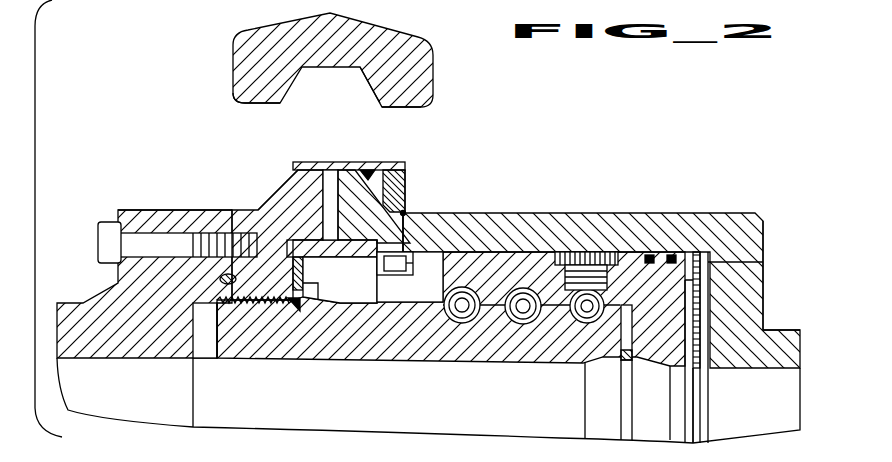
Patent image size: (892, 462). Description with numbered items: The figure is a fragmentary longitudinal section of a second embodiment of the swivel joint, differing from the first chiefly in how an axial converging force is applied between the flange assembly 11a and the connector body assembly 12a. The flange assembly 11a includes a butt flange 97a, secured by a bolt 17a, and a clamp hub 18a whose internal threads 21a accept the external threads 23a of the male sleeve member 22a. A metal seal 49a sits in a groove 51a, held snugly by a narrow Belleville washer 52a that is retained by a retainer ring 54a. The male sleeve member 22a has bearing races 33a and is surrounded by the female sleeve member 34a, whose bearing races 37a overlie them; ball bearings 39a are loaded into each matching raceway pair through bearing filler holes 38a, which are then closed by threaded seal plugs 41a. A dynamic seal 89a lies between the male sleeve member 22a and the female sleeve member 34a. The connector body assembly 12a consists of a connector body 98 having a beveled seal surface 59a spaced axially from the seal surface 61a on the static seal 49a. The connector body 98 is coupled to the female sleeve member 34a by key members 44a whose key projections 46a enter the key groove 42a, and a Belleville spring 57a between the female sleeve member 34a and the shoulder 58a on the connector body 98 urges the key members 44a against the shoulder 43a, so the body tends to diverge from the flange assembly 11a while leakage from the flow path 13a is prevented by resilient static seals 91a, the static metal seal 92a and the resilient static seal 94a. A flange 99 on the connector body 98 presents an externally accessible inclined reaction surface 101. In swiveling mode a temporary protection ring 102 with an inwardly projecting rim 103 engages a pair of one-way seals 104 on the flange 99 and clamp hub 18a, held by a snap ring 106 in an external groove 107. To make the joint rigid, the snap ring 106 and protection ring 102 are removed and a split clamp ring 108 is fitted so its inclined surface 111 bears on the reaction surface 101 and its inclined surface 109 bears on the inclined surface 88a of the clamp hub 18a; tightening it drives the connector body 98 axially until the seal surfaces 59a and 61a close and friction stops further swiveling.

The flange assembly 11a is at (114, 210).
The connector body assembly 12a is at (766, 232).
The flow path 13a is at (137, 400).
The bolt 17a is at (100, 243).
The clamp hub 18a is at (287, 203).
The internal threads 21a is at (253, 305).
The male sleeve member 22a is at (402, 350).
The external threads 23a is at (249, 330).
The bearing races 33a is at (453, 321).
The female sleeve member 34a is at (710, 262).
The bearing races 37a is at (571, 298).
The bearing filler holes 38a is at (659, 321).
The ball bearings 39a is at (530, 324).
The threaded seal plugs 41a is at (590, 252).
The key groove 42a is at (433, 240).
The shoulder 43a is at (413, 266).
The key members 44a is at (410, 277).
The key projections 46a is at (404, 228).
The metal seal 49a is at (374, 206).
The groove 51a is at (320, 234).
The narrow Belleville washer 52a is at (296, 267).
The retainer ring 54a is at (334, 287).
The Belleville spring 57a is at (702, 343).
The shoulder 58a is at (698, 380).
The beveled seal surface 59a is at (340, 279).
The seal surface 61a is at (340, 243).
The inclined surface 88a is at (296, 186).
The dynamic seal 89a is at (632, 338).
The resilient static seals 91a is at (655, 256).
The static metal seal 92a is at (221, 278).
The resilient static seal 94a is at (285, 308).
The butt flange 97a is at (147, 212).
The connector body 98 is at (678, 215).
The flange 99 is at (368, 173).
The inclined reaction surface 101 is at (406, 170).
The temporary protection ring 102 is at (374, 104).
The inwardly projecting rim 103 is at (406, 185).
The one-way seals 104 is at (348, 168).
The snap ring 106 is at (406, 213).
The external groove 107 is at (406, 207).
The split clamp ring 108 is at (434, 55).
The inclined surface 109 is at (288, 95).
The inclined surface 111 is at (400, 118).